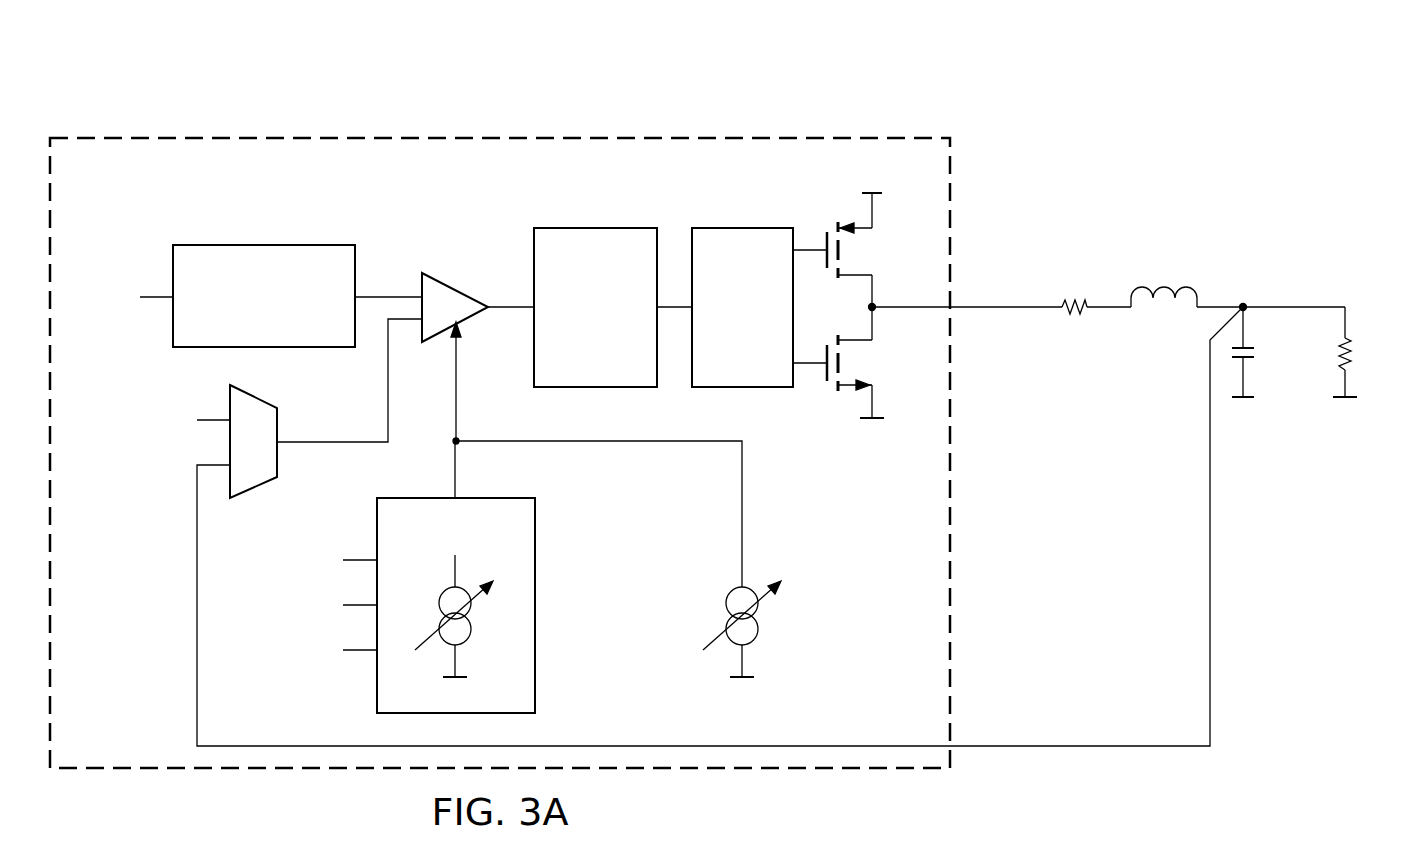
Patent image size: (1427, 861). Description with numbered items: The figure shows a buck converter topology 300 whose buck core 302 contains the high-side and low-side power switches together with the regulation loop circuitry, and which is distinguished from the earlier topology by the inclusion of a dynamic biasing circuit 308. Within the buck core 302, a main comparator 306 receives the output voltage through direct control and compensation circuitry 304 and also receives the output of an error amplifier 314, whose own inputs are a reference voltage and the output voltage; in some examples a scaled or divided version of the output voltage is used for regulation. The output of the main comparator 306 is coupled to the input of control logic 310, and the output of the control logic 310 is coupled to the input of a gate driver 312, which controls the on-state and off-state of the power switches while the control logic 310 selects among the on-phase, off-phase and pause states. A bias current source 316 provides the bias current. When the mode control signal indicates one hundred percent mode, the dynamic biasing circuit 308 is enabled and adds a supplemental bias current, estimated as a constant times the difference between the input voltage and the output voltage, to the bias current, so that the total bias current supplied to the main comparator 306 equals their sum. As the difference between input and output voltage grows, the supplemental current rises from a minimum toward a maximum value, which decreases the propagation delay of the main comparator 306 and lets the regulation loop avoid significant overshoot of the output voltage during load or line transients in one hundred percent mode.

The buck converter topology 300 is at (1092, 92).
The buck core 302 is at (459, 134).
The direct control and compensation circuitry 304 is at (263, 245).
The main comparator 306 is at (470, 322).
The dynamic biasing circuit 308 is at (377, 683).
The control logic 310 is at (595, 228).
The gate driver 312 is at (743, 228).
The error amplifier 314 is at (255, 490).
The bias current source 316 is at (757, 648).